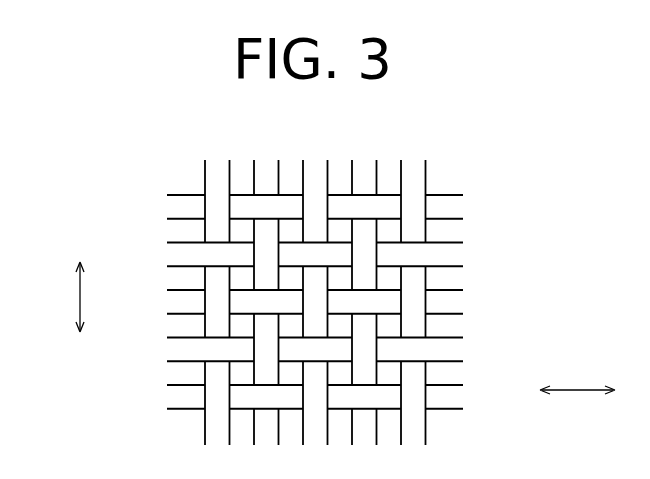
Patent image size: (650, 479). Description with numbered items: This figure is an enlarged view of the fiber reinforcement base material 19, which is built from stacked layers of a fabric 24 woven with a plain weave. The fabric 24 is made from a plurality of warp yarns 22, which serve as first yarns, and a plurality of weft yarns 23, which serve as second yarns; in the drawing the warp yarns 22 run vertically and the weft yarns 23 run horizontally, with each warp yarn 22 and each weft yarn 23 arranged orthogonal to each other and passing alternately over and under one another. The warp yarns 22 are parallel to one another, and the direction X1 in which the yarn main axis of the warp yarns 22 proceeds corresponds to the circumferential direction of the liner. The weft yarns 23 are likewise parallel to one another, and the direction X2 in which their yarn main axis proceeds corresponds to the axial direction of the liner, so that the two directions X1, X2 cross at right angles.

The fiber reinforcement base material 19 is at (443, 260).
The warp yarns 22 is at (223, 173).
The weft yarns 23 is at (183, 205).
The fabric 24 is at (443, 340).
The direction of the yarn main axis of the warp yarns X1 is at (80, 290).
The direction of the yarn main axis of the weft yarns X2 is at (577, 393).